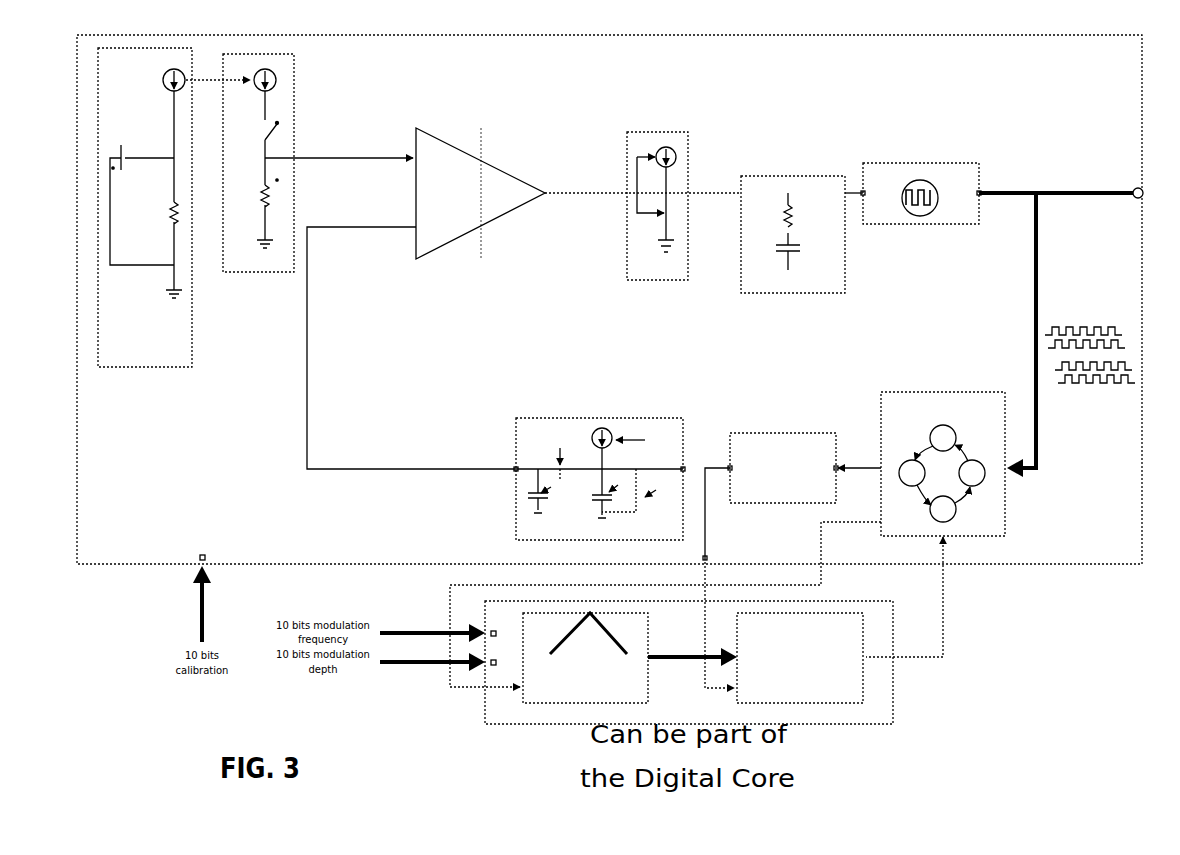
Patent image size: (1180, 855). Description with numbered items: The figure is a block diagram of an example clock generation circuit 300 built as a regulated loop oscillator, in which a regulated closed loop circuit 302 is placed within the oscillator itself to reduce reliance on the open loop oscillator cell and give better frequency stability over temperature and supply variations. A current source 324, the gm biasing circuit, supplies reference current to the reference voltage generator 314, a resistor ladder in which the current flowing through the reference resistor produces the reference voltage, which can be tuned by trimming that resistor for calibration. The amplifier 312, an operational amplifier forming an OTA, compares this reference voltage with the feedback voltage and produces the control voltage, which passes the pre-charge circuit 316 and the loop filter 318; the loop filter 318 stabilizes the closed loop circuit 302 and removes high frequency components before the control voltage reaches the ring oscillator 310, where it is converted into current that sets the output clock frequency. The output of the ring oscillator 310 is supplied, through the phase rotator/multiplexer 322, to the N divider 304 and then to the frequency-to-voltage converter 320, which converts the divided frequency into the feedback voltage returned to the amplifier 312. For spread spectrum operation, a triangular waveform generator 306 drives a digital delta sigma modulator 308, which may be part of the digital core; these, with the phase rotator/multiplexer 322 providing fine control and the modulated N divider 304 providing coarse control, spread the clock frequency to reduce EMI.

The clock generation circuit 300 is at (255, 668).
The regulated closed loop circuit 302 is at (427, 484).
The N divider 304 is at (763, 500).
The triangular waveform generator 306 is at (572, 705).
The digital delta sigma modulator 308 is at (783, 694).
The ring oscillator 310 is at (891, 163).
The amplifier 312 is at (452, 286).
The reference voltage generator 314 is at (292, 138).
The pre-charge circuit 316 is at (687, 165).
The loop filter 318 is at (782, 176).
The frequency-to-voltage converter 320 is at (677, 416).
The phase rotator/multiplexer 322 is at (910, 391).
The current source 324 is at (188, 330).